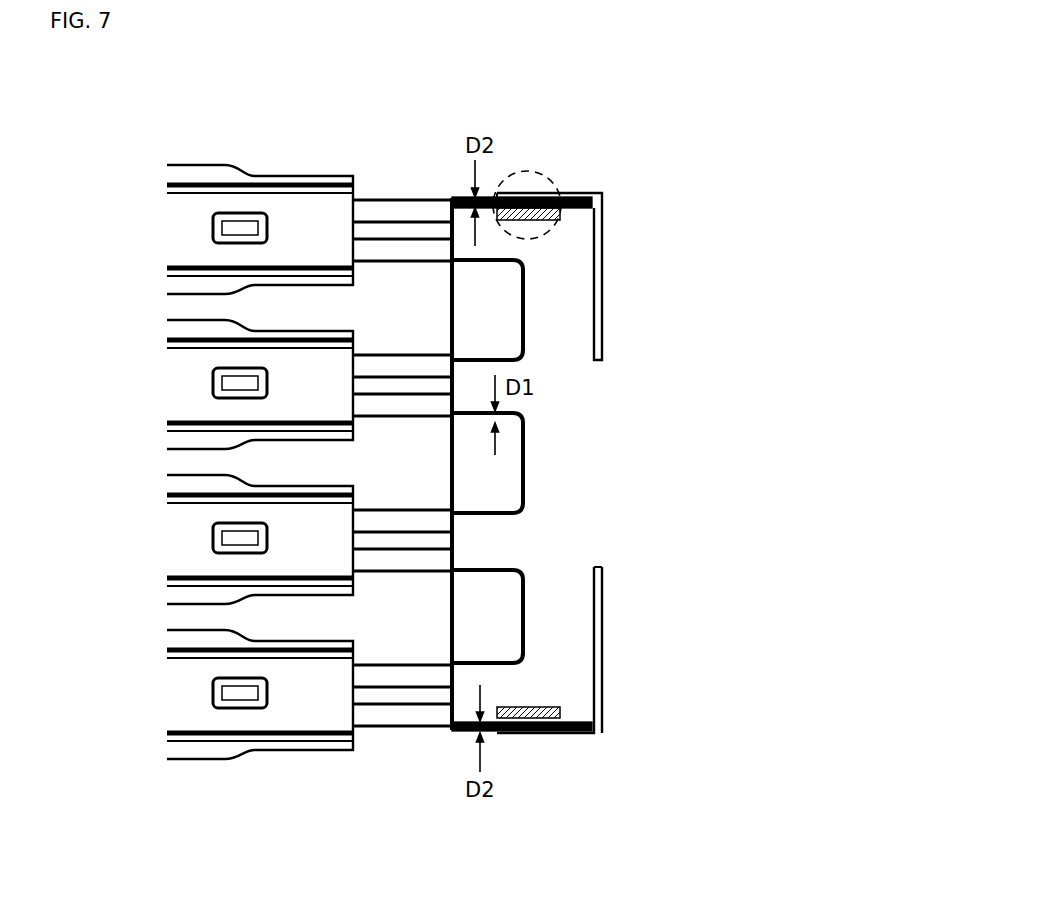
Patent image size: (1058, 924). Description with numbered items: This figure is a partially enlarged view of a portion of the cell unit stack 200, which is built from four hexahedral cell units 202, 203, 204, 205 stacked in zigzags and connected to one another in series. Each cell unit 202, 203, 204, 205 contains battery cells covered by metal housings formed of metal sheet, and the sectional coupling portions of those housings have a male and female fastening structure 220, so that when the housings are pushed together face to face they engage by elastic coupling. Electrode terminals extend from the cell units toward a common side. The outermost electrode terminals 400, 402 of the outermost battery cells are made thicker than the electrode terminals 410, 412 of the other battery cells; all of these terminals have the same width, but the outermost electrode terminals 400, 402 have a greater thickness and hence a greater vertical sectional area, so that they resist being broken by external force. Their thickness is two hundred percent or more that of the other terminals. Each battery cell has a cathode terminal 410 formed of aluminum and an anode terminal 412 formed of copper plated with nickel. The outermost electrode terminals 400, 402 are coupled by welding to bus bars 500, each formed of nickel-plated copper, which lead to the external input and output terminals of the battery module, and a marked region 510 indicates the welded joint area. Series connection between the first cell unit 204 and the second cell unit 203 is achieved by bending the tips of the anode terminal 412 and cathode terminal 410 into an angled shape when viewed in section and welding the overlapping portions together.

The cell unit stack 200 is at (132, 147).
The cell unit 202 is at (167, 688).
The cell unit 203 is at (177, 537).
The cell unit 204 is at (177, 382).
The cell unit 205 is at (177, 227).
The male and female fastening structure 220 is at (248, 212).
The outermost electrode terminal 400 is at (461, 197).
The outermost electrode terminal 402 is at (462, 731).
The cathode terminal 410 is at (500, 516).
The anode terminal 412 is at (478, 418).
The bus bar 500 is at (603, 252).
The weld region 510 is at (551, 179).